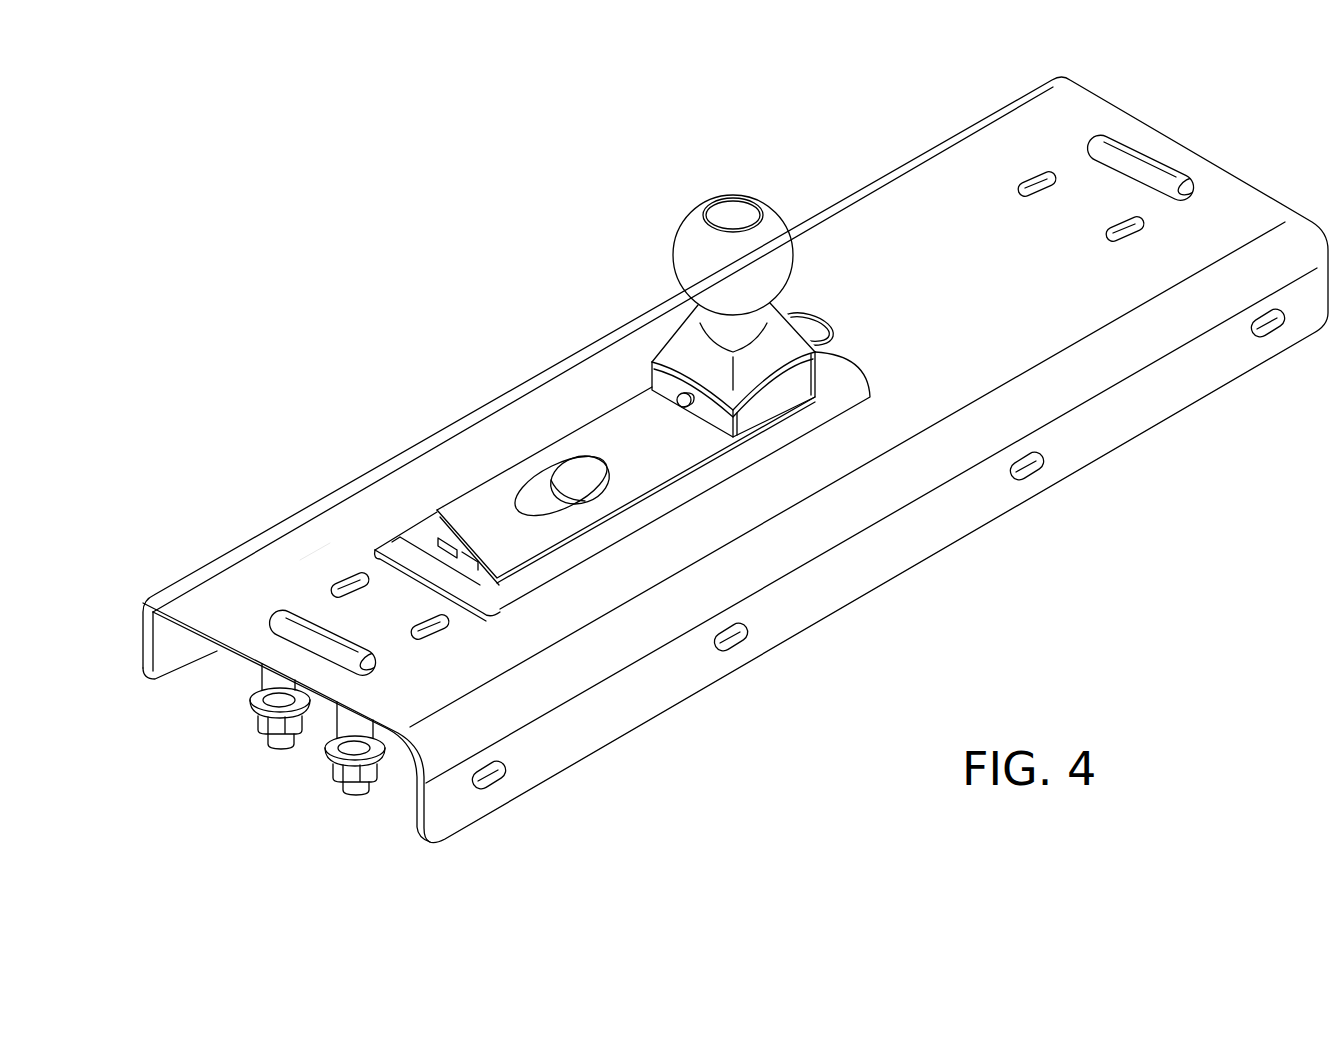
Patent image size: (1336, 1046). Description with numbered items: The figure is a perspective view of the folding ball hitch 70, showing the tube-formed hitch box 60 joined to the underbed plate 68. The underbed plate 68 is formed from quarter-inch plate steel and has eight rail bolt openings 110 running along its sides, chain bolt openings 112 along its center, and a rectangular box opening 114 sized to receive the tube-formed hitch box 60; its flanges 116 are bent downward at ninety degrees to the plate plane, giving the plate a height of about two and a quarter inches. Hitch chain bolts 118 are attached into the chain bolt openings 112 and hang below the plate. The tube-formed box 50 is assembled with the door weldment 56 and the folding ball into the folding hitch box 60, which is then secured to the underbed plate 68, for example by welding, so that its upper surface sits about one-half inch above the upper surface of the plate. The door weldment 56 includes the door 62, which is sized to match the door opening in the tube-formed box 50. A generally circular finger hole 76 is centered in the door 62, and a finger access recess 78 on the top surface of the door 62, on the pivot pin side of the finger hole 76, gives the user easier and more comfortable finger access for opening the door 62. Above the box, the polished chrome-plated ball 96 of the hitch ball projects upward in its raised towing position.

The tube-formed box 50 is at (602, 404).
The door weldment 56 is at (443, 503).
The folding hitch box 60 is at (522, 410).
The door 62 is at (447, 510).
The underbed plate 68 is at (313, 550).
The folding ball hitch 70 is at (362, 240).
The finger hole 76 is at (585, 483).
The finger access recess 78 is at (480, 505).
The ball 96 is at (692, 252).
The rail bolt openings 110 is at (493, 780).
The chain bolt openings 112 is at (340, 583).
The box opening 114 is at (530, 590).
The flanges 116 is at (180, 645).
The hitch chain bolts 118 is at (278, 745).